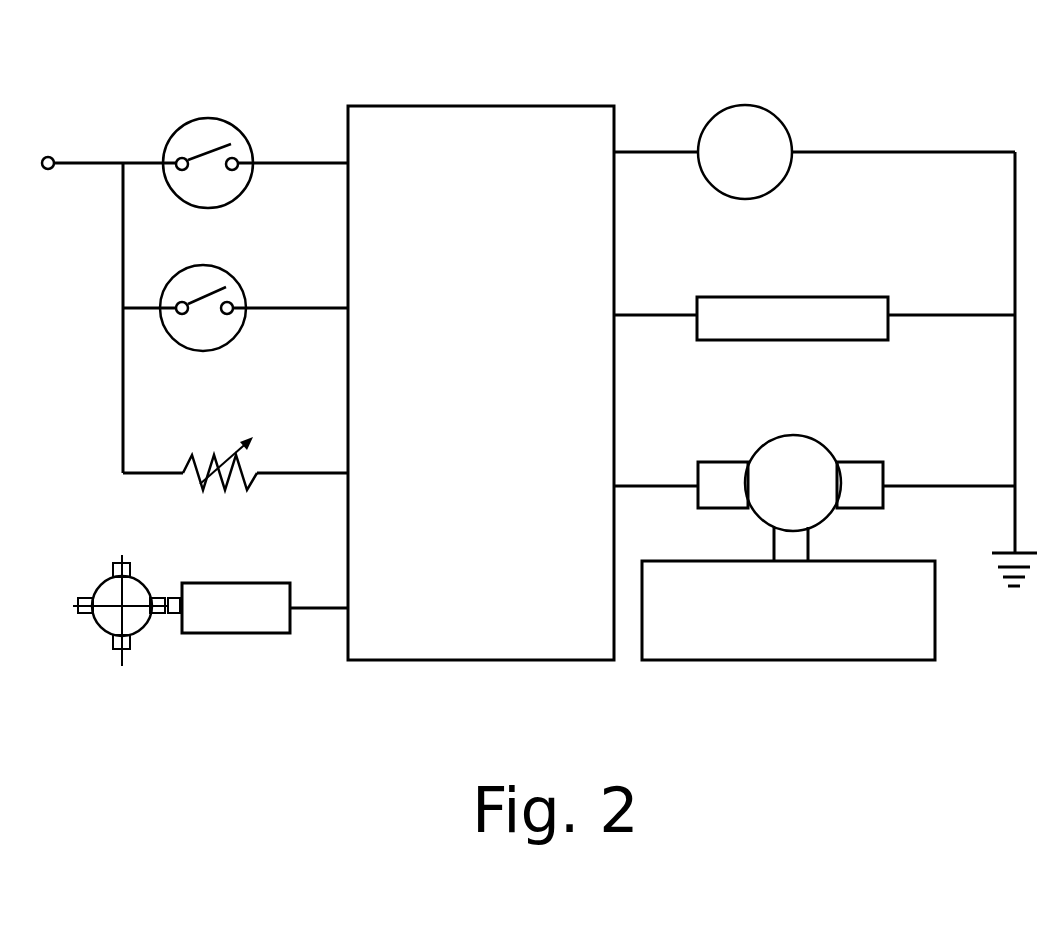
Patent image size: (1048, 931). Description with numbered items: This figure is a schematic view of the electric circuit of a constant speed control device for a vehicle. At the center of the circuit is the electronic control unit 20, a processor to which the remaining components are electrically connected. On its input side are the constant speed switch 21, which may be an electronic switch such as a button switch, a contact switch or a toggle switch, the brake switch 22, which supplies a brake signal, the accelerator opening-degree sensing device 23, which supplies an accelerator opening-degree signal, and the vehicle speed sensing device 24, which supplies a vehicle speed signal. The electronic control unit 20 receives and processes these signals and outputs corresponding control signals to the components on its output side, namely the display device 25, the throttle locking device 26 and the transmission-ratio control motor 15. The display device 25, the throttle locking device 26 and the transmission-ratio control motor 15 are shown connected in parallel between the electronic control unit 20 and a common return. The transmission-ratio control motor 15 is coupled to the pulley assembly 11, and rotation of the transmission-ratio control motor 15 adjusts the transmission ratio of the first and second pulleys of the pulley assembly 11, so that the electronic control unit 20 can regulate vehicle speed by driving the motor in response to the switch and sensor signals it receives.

The electronic control unit 20 is at (447, 127).
The constant speed switch 21 is at (193, 122).
The brake switch 22 is at (210, 263).
The accelerator opening-degree sensing device 23 is at (212, 440).
The vehicle speed sensing device 24 is at (163, 648).
The display device 25 is at (773, 110).
The throttle locking device 26 is at (805, 296).
The transmission-ratio control motor 15 is at (763, 442).
The pulley assembly 11 is at (767, 652).